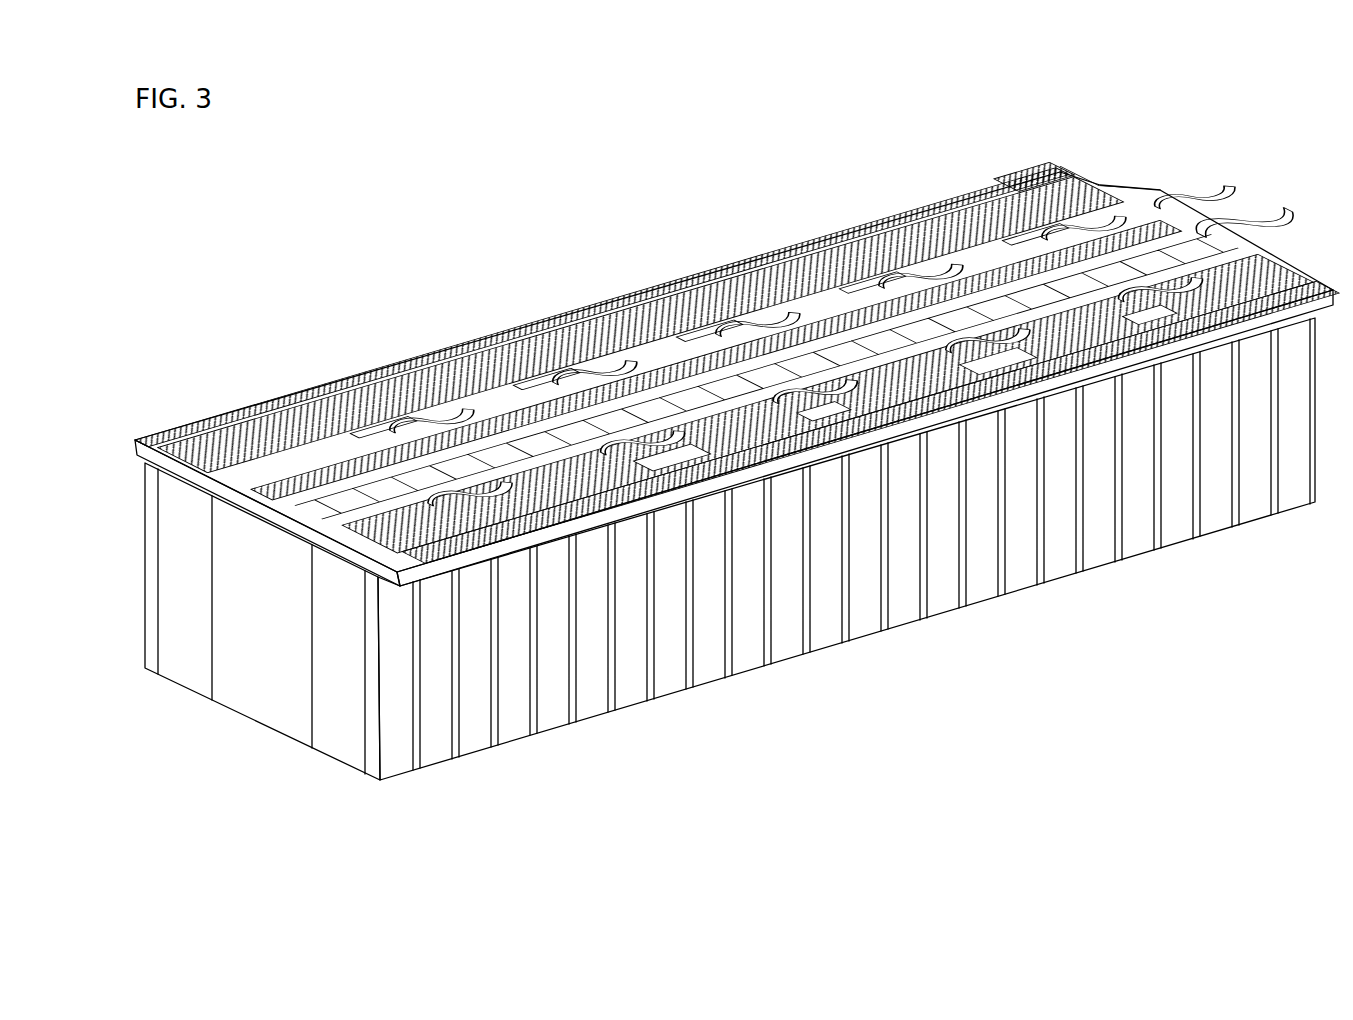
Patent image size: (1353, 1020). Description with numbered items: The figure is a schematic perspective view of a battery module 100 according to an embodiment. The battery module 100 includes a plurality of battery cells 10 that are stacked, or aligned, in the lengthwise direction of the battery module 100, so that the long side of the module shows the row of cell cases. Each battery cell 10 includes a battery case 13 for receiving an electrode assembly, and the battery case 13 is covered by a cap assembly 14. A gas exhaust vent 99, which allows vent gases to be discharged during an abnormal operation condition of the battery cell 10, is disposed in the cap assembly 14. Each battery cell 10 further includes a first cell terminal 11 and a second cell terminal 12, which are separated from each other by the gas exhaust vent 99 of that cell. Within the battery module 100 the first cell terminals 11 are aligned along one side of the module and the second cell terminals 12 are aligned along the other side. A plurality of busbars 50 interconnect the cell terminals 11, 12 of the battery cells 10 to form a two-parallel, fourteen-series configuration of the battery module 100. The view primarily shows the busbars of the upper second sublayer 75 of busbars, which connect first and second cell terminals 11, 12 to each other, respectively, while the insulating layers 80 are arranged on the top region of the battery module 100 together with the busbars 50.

The battery module 100 is at (341, 279).
The battery cell 10 is at (968, 585).
The first cell terminal 11 is at (663, 317).
The second cell terminal 12 is at (680, 455).
The battery case 13 is at (277, 660).
The cap assembly 14 is at (247, 510).
The busbar 50 is at (437, 418).
The upper second sublayer of busbars 75 is at (709, 331).
The insulating layers 80 is at (588, 385).
The gas exhaust vent 99 is at (1180, 233).